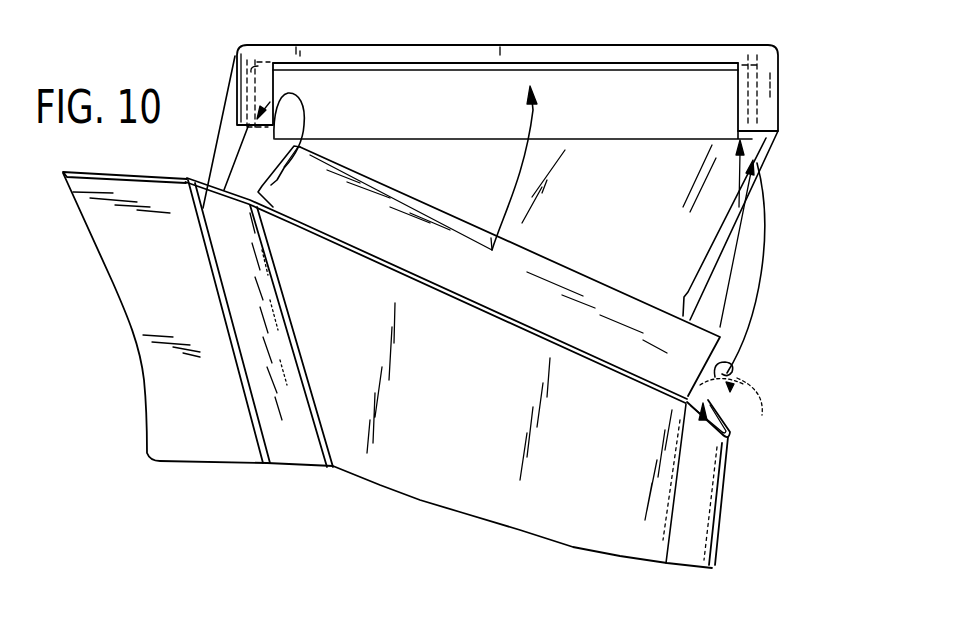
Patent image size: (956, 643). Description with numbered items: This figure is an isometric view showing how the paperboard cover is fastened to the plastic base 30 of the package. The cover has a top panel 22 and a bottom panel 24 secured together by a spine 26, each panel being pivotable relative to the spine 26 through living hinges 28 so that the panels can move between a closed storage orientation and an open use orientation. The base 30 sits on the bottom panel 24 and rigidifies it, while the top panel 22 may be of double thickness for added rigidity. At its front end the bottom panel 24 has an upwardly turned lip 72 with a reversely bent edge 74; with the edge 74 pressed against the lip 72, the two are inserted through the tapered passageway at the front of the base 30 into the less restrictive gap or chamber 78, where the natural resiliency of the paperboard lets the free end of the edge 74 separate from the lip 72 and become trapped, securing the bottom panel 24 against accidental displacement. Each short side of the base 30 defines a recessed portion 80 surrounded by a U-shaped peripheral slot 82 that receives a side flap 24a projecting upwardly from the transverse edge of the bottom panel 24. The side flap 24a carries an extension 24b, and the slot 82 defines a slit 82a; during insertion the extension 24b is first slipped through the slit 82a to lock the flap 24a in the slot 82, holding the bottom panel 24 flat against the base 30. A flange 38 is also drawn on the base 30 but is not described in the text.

The top panel 22 is at (104, 169).
The bottom panel 24 is at (443, 473).
The side flap 24a is at (503, 280).
The extension 24b is at (295, 222).
The spine 26 is at (294, 440).
The living hinge 28 is at (213, 203).
The base 30 is at (782, 89).
The flange 38 is at (224, 138).
The lip 72 is at (692, 533).
The reversely bent edge 74 is at (730, 427).
The gap or chamber 78 is at (723, 220).
The recessed portion 80 is at (432, 88).
The peripheral slot 82 is at (608, 68).
The slit 82a is at (236, 47).